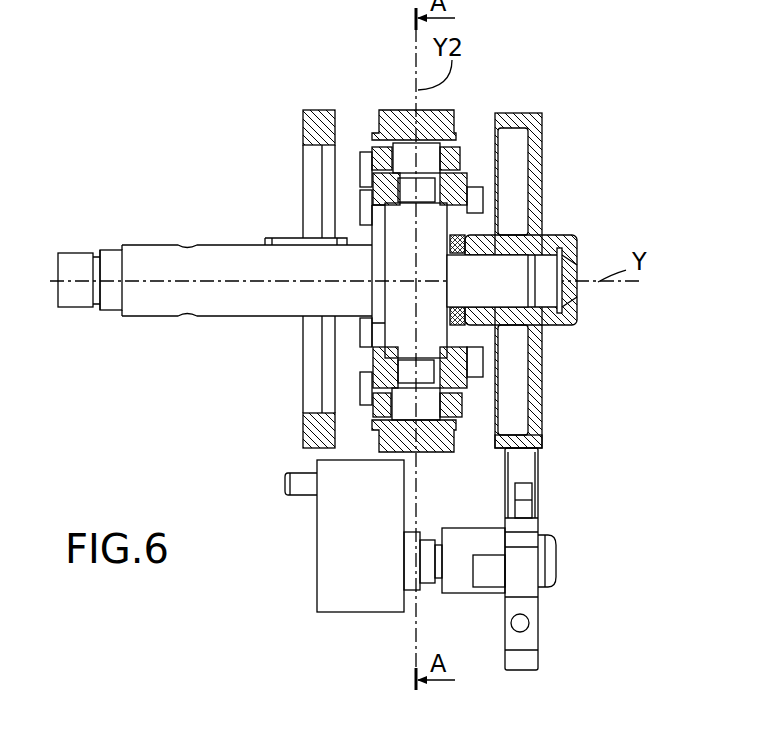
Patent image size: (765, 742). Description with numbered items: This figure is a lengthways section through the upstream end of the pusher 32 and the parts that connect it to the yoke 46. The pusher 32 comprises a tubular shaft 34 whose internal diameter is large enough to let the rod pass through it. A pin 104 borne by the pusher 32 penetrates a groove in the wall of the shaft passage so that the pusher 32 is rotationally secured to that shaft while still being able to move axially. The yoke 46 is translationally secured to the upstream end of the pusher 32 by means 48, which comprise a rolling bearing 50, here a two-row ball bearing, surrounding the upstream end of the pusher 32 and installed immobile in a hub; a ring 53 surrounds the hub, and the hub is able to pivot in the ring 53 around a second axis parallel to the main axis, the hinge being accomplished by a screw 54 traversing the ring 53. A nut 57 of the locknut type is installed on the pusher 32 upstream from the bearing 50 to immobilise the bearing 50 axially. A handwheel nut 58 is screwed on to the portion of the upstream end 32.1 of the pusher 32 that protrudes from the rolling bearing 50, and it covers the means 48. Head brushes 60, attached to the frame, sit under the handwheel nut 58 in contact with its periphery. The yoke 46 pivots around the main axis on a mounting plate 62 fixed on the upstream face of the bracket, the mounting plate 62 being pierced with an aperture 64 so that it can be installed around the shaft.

The pusher 32 is at (132, 318).
The upstream end 32.1 is at (522, 282).
The tubular shaft 34 is at (251, 303).
The yoke 46 is at (387, 106).
The means 48 is at (472, 389).
The rolling bearing 50 is at (398, 226).
The ring 53 is at (530, 437).
The screw 54 is at (447, 150).
The nut 57 is at (474, 229).
The handwheel nut 58 is at (568, 248).
The head brushes 60 is at (541, 472).
The mounting plate 62 is at (308, 130).
The aperture 64 is at (318, 402).
The pin 104 is at (281, 237).